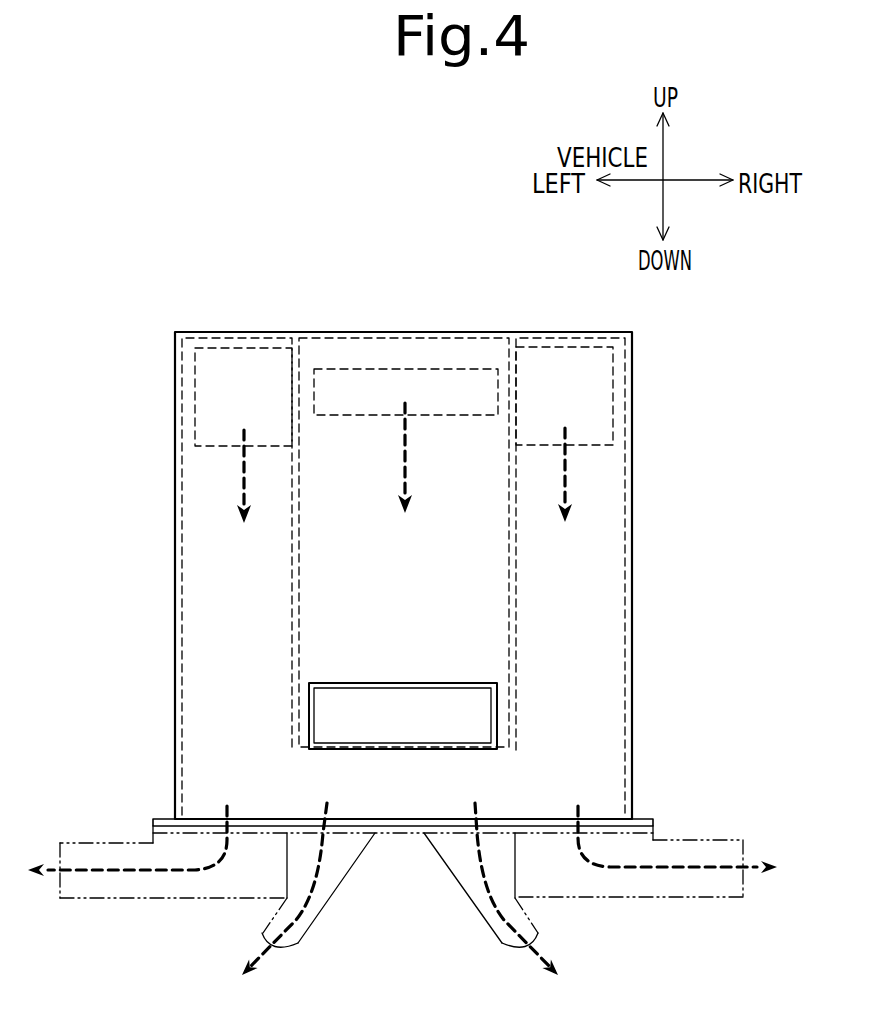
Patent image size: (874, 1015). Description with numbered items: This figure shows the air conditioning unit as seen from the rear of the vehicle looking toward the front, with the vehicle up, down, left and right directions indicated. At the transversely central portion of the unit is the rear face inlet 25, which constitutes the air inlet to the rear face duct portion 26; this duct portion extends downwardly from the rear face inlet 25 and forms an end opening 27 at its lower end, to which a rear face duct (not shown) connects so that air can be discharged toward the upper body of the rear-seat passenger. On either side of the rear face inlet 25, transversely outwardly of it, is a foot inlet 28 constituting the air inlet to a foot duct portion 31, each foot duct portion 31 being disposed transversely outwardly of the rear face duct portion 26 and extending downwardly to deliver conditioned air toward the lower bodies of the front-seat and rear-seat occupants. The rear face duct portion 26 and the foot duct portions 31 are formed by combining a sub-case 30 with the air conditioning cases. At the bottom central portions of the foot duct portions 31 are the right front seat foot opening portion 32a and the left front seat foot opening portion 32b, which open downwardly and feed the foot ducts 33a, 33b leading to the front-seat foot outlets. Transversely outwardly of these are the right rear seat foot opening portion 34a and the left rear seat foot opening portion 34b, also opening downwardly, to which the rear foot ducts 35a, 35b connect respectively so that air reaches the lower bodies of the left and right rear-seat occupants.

The rear face inlet 25 is at (423, 382).
The rear face duct portion 26 is at (412, 548).
The end opening 27 is at (416, 726).
The foot inlet 28 is at (212, 398).
The sub-case 30 is at (633, 553).
The foot duct portion 31 is at (235, 617).
The right front seat foot opening portion 32a is at (565, 817).
The left front seat foot opening portion 32b is at (212, 817).
The foot duct 33a is at (704, 853).
The foot duct 33b is at (93, 857).
The right rear seat foot opening portion 34a is at (453, 817).
The left rear seat foot opening portion 34b is at (345, 817).
The rear foot duct 35a is at (490, 916).
The rear foot duct 35b is at (308, 916).